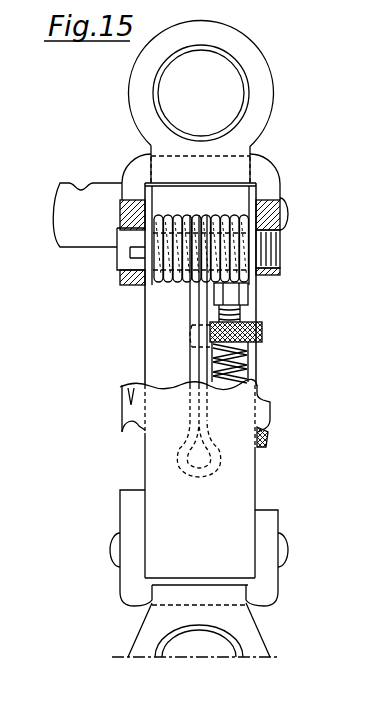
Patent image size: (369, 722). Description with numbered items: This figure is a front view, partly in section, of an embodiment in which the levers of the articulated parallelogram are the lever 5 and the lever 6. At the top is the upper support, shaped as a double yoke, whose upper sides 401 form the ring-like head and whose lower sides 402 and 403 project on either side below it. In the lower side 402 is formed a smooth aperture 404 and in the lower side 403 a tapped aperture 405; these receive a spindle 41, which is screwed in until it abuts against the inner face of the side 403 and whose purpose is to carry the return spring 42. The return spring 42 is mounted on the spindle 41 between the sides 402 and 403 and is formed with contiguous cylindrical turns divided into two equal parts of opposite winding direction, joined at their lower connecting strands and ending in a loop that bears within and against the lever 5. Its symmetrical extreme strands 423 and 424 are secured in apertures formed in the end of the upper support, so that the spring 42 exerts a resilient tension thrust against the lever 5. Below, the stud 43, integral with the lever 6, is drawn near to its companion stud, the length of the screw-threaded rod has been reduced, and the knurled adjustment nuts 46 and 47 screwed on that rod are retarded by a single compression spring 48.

The upper sides 401 is at (245, 64).
The extreme strand 424 is at (152, 154).
The extreme strand 423 is at (249, 153).
The lower side 402 is at (127, 205).
The lower side 403 is at (260, 175).
The spindle 41 is at (128, 257).
The smooth aperture 404 is at (128, 283).
The tapped aperture 405 is at (275, 273).
The return spring 42 is at (173, 281).
The stud 43 is at (240, 292).
The knurled adjustment nut 46 is at (253, 335).
The compression spring 48 is at (240, 358).
The lever 6 is at (158, 350).
The knurled adjustment nut 47 is at (260, 433).
The lever 5 is at (157, 446).